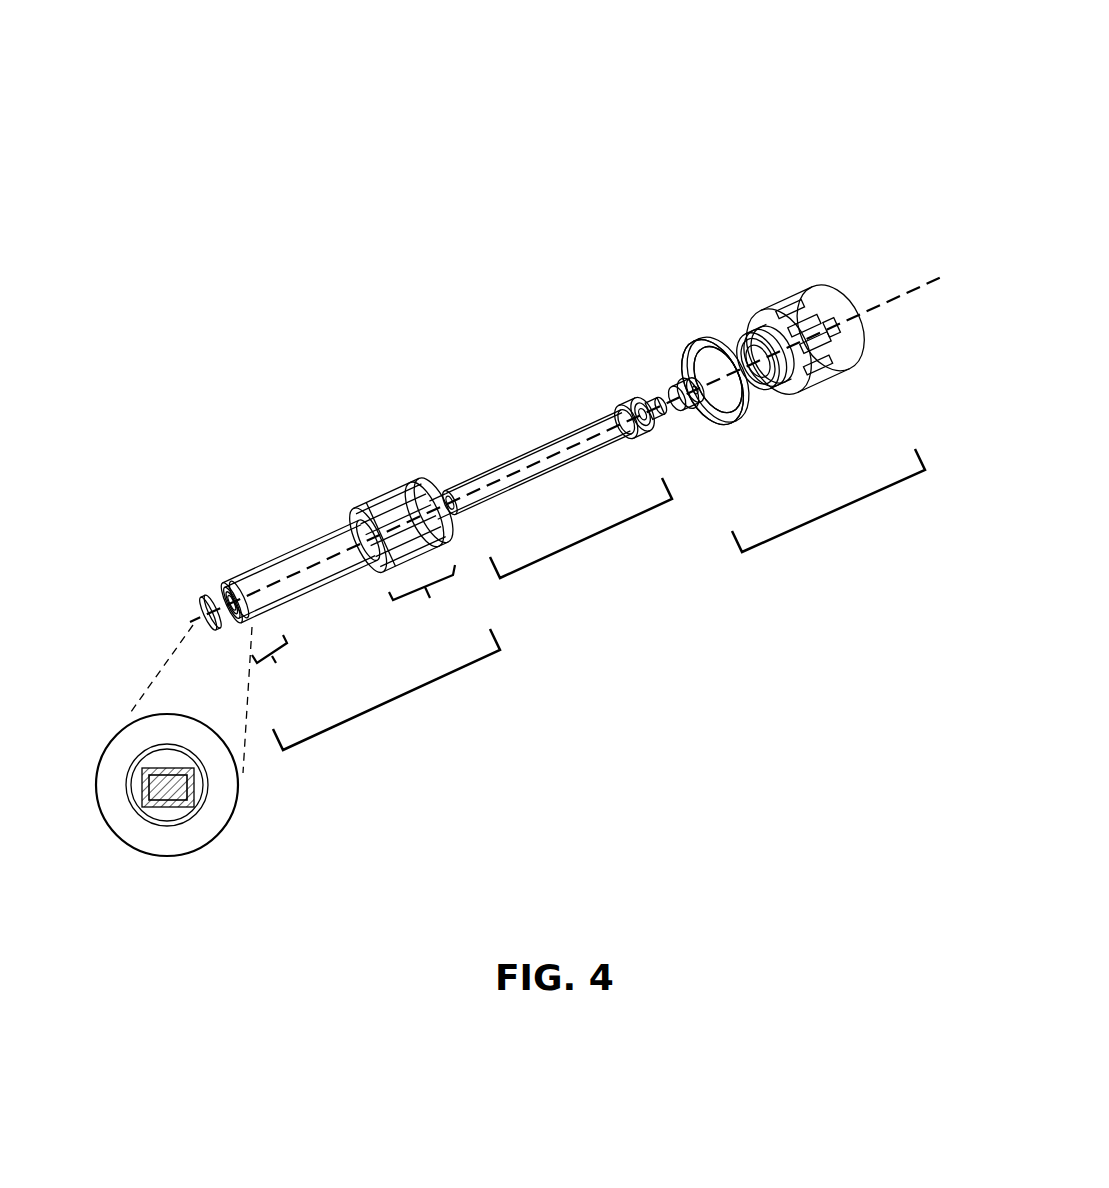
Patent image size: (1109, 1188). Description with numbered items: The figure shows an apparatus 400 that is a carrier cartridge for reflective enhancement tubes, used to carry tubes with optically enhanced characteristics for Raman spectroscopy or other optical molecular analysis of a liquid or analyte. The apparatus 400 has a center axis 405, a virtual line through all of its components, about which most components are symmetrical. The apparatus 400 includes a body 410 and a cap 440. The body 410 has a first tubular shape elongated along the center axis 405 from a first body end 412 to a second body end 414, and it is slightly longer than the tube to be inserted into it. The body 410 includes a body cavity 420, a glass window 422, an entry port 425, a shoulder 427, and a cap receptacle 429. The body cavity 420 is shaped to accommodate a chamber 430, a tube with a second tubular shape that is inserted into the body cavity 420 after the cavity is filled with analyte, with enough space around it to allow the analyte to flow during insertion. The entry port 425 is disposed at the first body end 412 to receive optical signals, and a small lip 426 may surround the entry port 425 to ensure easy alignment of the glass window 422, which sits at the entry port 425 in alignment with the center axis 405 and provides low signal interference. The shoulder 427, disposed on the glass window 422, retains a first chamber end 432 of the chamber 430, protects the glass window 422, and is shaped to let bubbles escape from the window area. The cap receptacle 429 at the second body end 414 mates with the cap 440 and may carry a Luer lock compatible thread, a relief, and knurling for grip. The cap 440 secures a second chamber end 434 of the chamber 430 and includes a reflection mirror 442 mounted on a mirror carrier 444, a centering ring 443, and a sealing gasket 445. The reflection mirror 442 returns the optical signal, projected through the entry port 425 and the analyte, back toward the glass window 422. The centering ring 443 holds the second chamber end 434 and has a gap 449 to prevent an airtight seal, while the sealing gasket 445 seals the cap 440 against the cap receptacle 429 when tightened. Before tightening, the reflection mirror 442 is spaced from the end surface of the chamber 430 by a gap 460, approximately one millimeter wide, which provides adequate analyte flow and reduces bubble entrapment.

The apparatus 400 is at (804, 113).
The center axis 405 is at (900, 283).
The body 410 is at (358, 638).
The first body end 412 is at (268, 641).
The second body end 414 is at (402, 551).
The body cavity 420 is at (305, 548).
The glass window 422 is at (200, 600).
The entry port 425 is at (228, 599).
The small lip 426 is at (156, 822).
The shoulder 427 is at (249, 600).
The cap receptacle 429 is at (389, 483).
The chamber 430 is at (558, 511).
The first chamber end 432 is at (453, 479).
The second chamber end 434 is at (601, 413).
The cap 440 is at (823, 417).
The reflection mirror 442 is at (683, 383).
The centering ring 443 is at (623, 420).
The mirror carrier 444 is at (687, 385).
The sealing gasket 445 is at (700, 350).
The gap 449 is at (629, 433).
The gap 460 is at (651, 405).